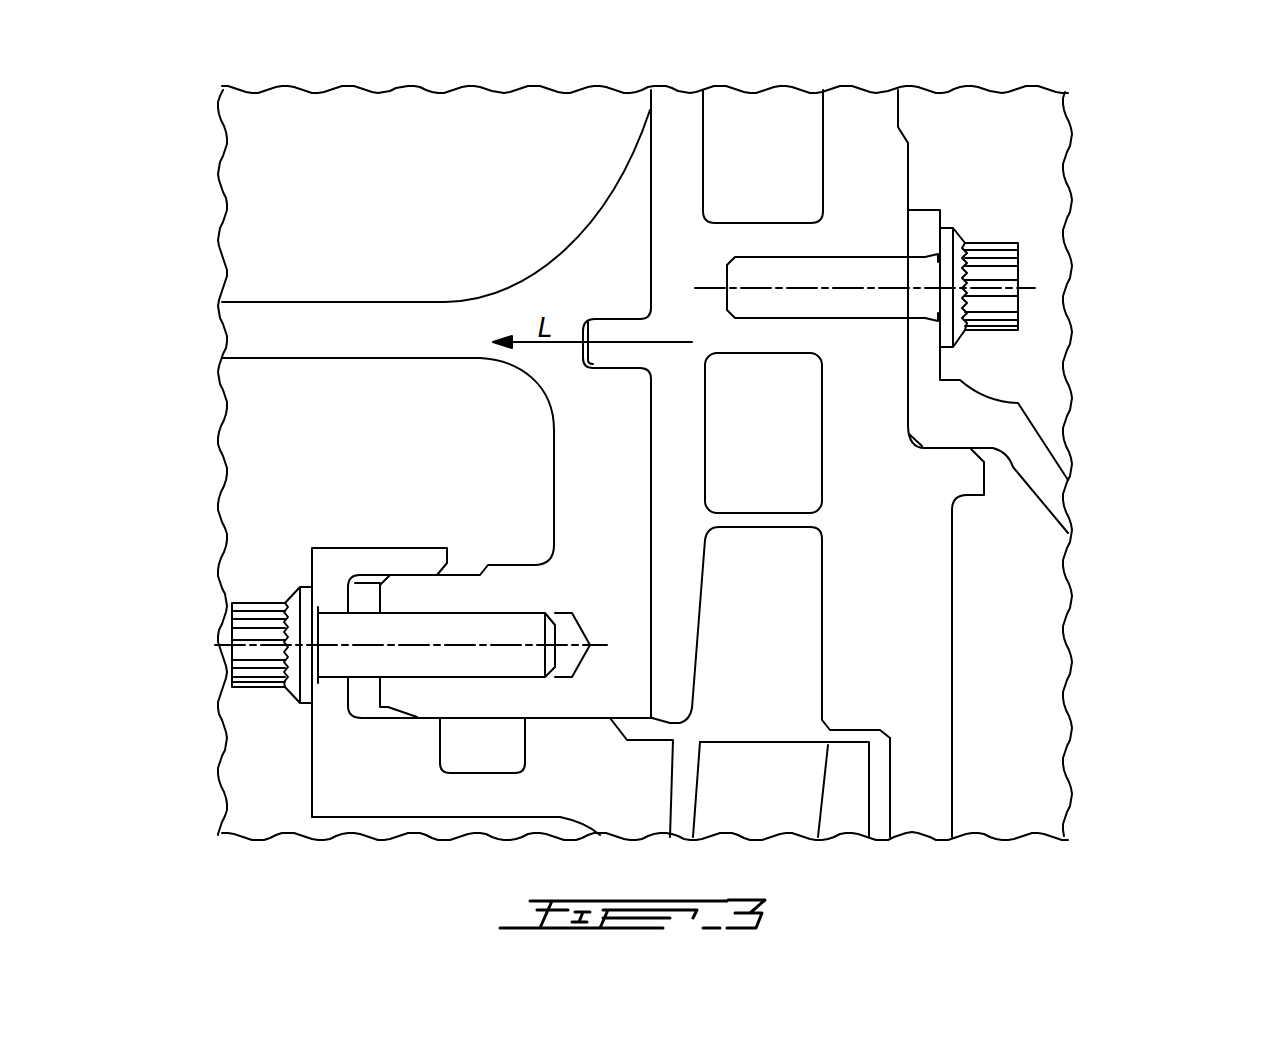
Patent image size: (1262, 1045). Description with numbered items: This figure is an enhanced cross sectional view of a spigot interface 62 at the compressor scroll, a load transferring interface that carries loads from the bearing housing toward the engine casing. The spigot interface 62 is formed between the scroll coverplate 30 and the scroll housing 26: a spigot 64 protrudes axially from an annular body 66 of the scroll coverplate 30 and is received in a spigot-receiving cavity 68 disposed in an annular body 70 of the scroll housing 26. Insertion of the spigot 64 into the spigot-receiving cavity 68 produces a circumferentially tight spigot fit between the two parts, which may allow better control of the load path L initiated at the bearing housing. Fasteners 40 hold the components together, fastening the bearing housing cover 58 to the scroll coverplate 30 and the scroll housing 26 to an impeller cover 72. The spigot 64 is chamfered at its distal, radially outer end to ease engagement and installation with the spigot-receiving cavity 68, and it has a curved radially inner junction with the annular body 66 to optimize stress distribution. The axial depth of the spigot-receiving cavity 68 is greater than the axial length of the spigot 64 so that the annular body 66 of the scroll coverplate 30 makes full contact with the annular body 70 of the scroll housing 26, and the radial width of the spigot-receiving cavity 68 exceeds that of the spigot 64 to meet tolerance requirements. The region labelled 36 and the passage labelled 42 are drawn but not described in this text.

The scroll housing 26 is at (445, 452).
The scroll coverplate 30 is at (1012, 679).
The gap 36 is at (422, 330).
The fasteners 40 is at (255, 662).
The passage 42 is at (757, 670).
The bearing housing cover 58 is at (997, 422).
The spigot interface 62 is at (598, 268).
The spigot 64 is at (622, 333).
The annular body of the scroll coverplate 66 is at (917, 588).
The spigot-receiving cavity 68 is at (600, 369).
The annular body of the scroll housing 70 is at (598, 512).
The impeller cover 72 is at (383, 790).